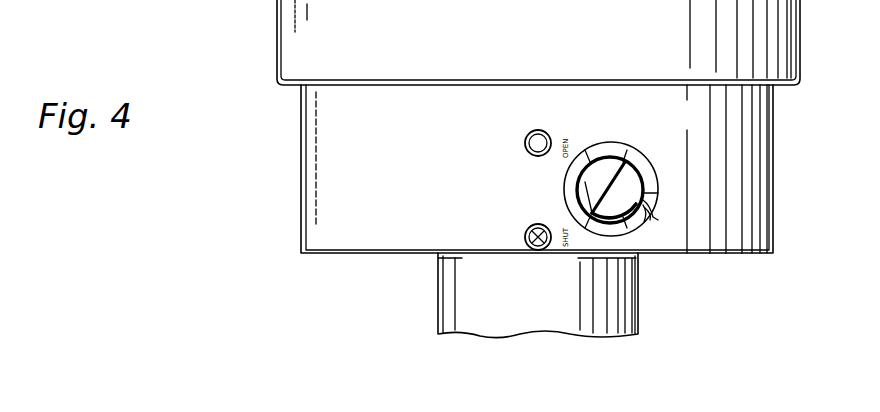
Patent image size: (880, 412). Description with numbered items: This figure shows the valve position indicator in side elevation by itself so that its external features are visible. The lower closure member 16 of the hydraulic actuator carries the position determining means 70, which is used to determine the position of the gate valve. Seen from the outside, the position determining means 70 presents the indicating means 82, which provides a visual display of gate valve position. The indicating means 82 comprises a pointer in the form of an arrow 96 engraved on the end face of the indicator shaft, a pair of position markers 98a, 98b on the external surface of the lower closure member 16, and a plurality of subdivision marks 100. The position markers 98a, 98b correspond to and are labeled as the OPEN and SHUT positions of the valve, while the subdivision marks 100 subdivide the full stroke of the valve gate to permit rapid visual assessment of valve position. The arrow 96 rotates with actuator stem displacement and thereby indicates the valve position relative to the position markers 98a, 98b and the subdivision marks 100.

The position determining means 70 is at (236, 31).
The lower closure member 16 is at (302, 163).
The position marker 98a is at (540, 130).
The position marker 98b is at (531, 228).
The indicating means 82 is at (547, 174).
The arrow 96 is at (640, 183).
The subdivision marks 100 is at (650, 217).